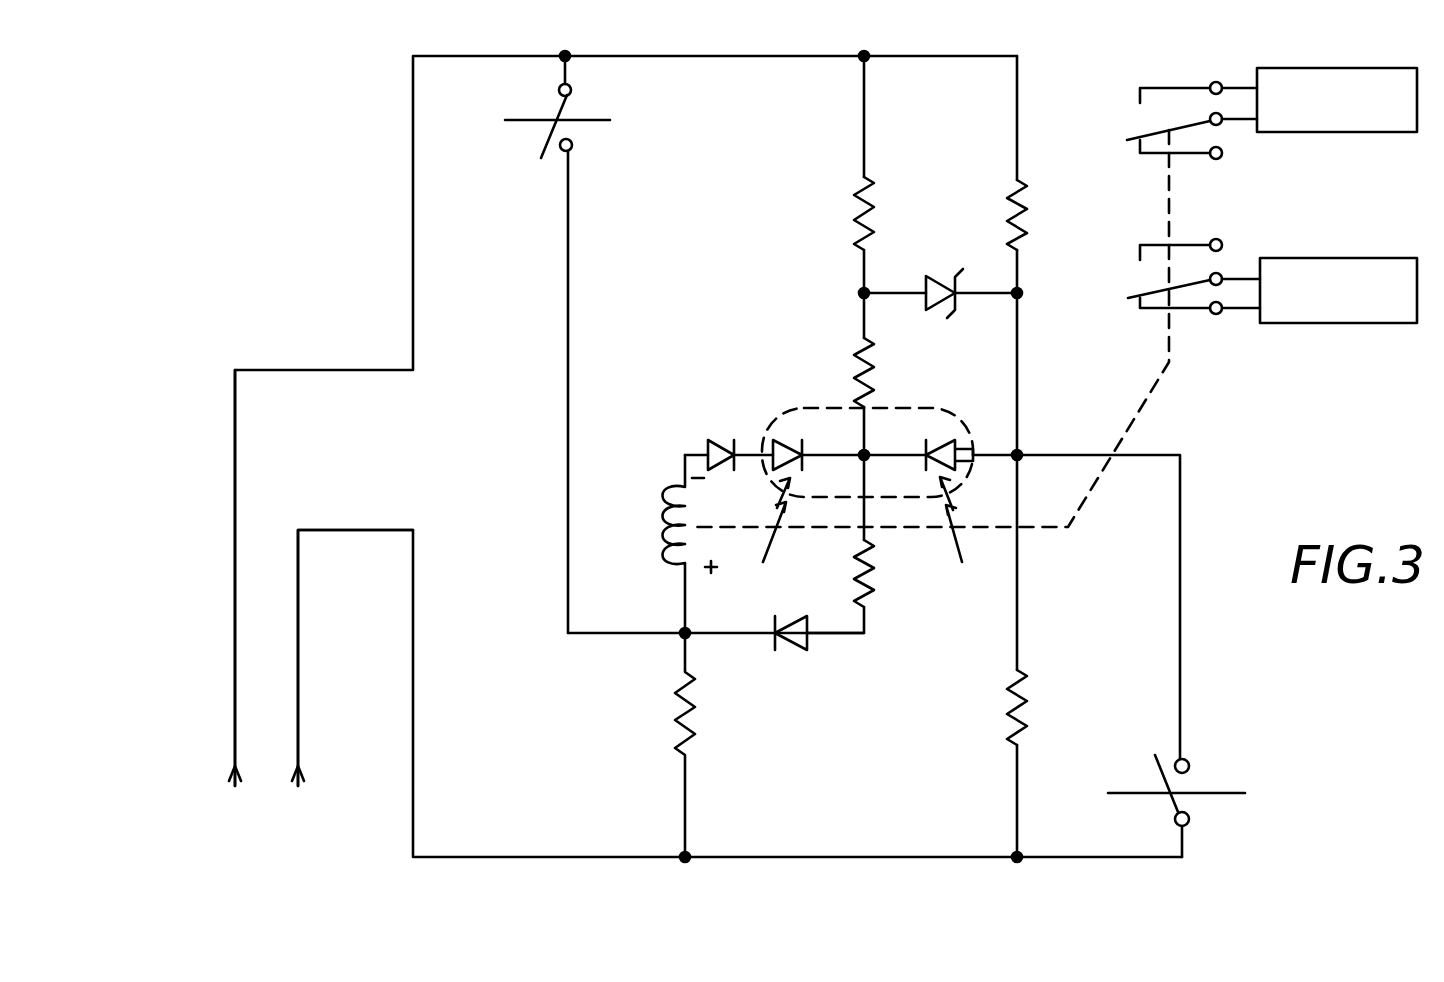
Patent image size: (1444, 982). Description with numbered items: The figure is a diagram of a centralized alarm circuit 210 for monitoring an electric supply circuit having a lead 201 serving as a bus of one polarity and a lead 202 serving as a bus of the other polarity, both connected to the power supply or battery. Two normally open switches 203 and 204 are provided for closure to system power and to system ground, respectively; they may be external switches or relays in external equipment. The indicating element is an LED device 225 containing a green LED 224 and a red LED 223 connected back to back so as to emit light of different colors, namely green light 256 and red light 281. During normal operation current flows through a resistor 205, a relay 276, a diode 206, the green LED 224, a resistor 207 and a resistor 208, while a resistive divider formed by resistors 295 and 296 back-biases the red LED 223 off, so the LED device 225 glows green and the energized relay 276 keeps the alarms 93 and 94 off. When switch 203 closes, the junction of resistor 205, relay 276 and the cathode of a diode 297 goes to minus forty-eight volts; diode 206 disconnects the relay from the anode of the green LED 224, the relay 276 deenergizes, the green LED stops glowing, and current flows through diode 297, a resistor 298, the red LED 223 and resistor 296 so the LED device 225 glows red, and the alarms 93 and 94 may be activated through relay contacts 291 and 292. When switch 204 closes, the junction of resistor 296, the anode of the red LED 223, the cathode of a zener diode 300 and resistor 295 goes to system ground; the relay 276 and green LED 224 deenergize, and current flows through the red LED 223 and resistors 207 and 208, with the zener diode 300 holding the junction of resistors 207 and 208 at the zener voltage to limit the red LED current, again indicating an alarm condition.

The lead 201 is at (237, 474).
The lead 202 is at (299, 618).
The switch 203 is at (543, 144).
The switch 204 is at (1158, 773).
The resistor 205 is at (678, 722).
The diode 206 is at (713, 440).
The resistor 207 is at (850, 345).
The resistor 208 is at (856, 215).
The alarm circuit 210 is at (702, 319).
The red LED 223 is at (973, 447).
The green LED 224 is at (818, 388).
The LED device 225 is at (903, 408).
The green light 256 is at (765, 556).
The relay 276 is at (668, 549).
The red light 281 is at (945, 546).
The relay contacts 291 is at (1183, 302).
The relay contacts 292 is at (1160, 150).
The resistor 295 is at (1008, 214).
The resistor 296 is at (1010, 722).
The diode 297 is at (795, 651).
The resistor 298 is at (866, 606).
The zener diode 300 is at (960, 274).
The alarm 93 is at (1378, 323).
The alarm 94 is at (1378, 132).